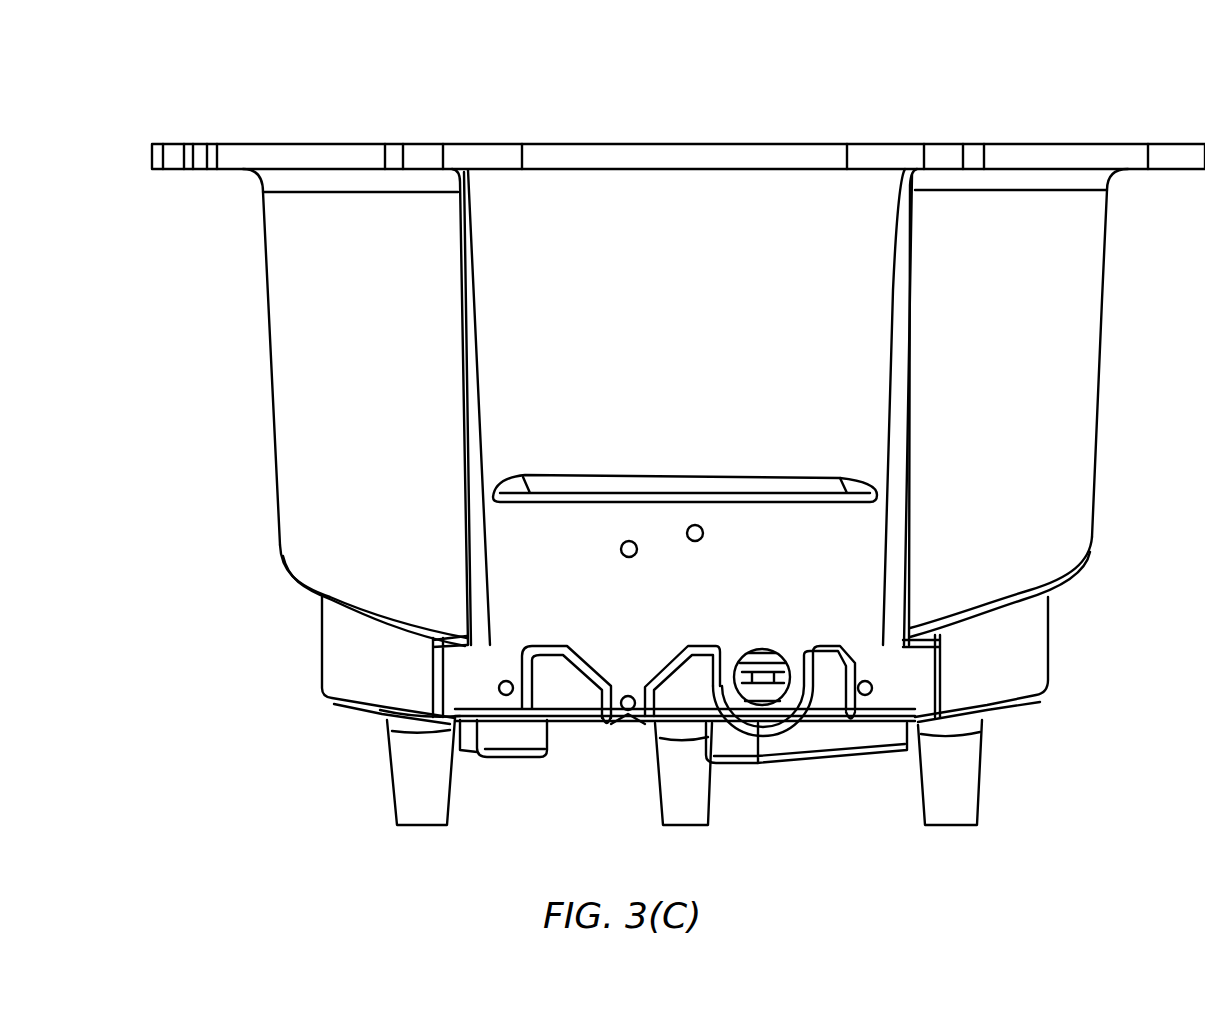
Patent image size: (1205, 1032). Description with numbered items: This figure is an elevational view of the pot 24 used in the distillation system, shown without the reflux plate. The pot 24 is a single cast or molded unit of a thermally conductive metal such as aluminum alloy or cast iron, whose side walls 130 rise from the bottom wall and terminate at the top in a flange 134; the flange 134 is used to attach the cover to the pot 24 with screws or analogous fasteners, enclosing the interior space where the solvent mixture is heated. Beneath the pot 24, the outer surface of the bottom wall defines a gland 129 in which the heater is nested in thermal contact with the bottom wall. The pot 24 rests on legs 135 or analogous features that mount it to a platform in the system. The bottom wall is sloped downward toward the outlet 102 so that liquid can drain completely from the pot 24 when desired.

The pot 24 is at (795, 86).
The flange 134 is at (1088, 152).
The side walls 130 is at (1058, 355).
The legs 135 is at (408, 780).
The gland 129 is at (490, 742).
The outlet 102 is at (773, 703).